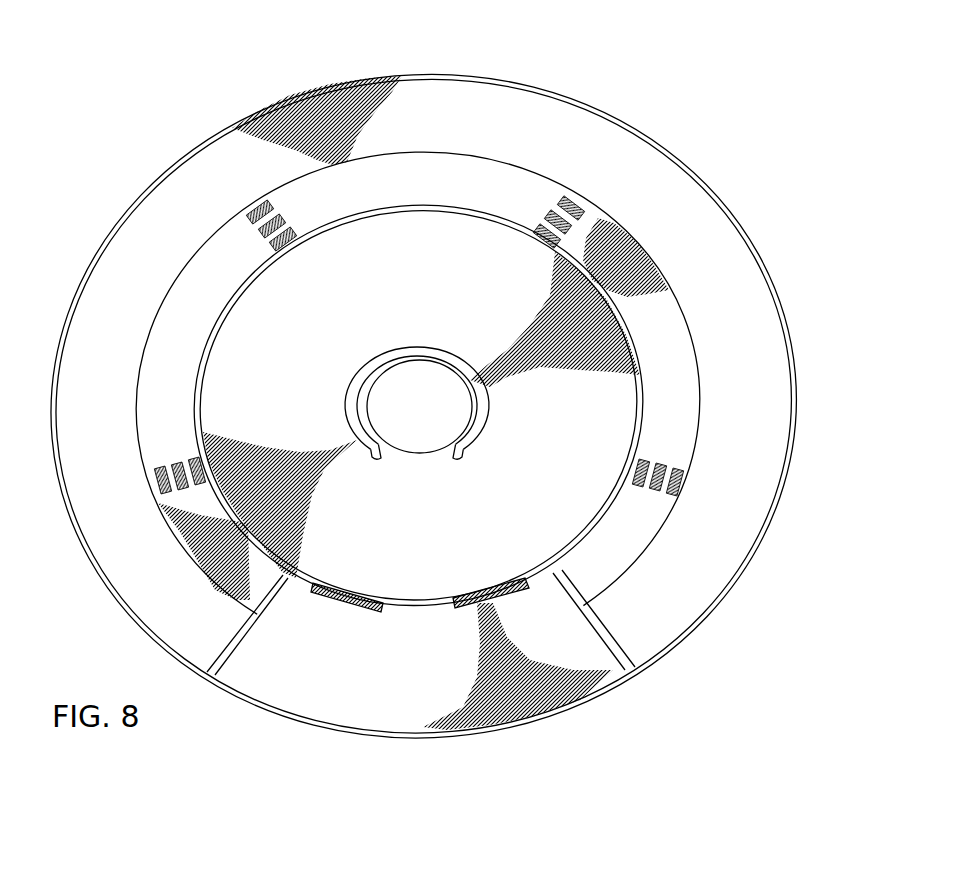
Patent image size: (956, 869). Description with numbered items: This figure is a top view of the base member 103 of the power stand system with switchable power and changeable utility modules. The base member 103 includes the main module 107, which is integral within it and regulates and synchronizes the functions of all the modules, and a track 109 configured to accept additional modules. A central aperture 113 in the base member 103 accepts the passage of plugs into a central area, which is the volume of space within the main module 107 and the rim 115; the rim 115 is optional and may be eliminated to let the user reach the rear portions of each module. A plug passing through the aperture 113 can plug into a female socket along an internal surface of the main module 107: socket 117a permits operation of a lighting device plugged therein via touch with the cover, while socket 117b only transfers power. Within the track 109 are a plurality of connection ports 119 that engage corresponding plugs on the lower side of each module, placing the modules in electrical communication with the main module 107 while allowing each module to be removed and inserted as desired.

The base member 103 is at (735, 130).
The main module 107 is at (349, 659).
The track 109 is at (174, 226).
The central aperture 113 is at (423, 452).
The rim 115 is at (398, 207).
The socket 117a is at (483, 585).
The socket 117b is at (372, 590).
The connection ports 119 is at (557, 213).